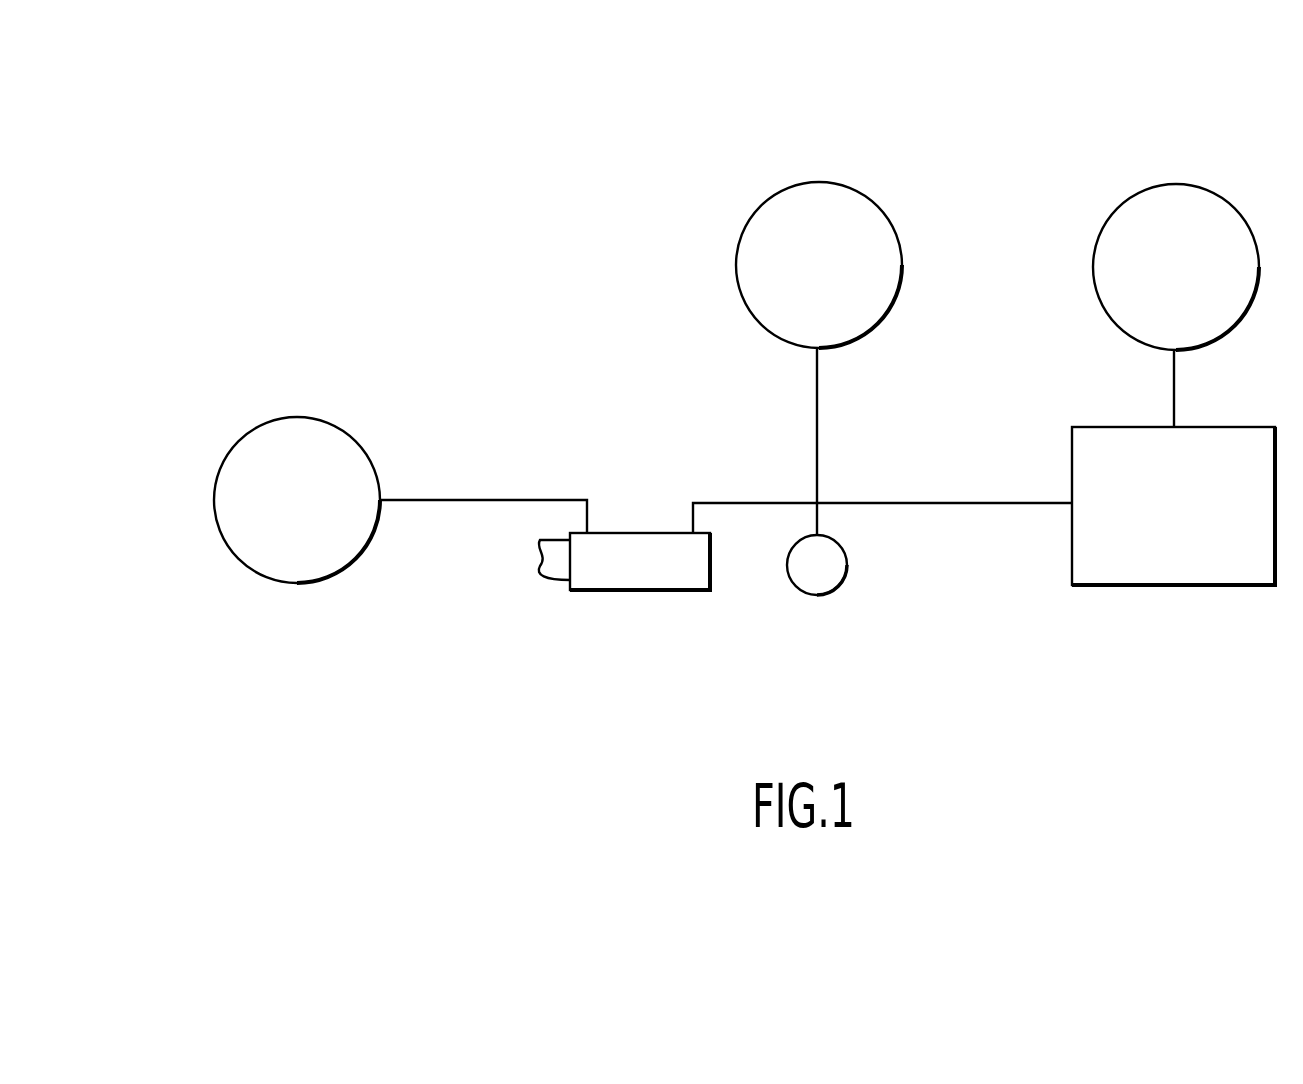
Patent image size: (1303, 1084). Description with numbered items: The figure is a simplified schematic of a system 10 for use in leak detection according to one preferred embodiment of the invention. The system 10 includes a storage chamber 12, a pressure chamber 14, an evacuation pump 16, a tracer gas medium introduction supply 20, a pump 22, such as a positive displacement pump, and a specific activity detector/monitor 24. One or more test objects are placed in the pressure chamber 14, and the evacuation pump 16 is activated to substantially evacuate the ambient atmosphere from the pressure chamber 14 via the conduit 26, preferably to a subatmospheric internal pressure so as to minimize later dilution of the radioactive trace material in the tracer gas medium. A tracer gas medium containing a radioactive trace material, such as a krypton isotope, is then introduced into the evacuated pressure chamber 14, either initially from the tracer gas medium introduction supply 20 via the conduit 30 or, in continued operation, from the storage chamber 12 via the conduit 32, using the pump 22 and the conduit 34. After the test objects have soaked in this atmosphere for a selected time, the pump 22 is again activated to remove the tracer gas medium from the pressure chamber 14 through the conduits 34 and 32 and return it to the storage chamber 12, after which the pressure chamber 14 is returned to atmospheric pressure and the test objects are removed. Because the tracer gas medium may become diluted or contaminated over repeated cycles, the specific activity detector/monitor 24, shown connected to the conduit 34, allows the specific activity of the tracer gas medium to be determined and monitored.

The system 10 is at (1000, 100).
The storage chamber 12 is at (312, 512).
The pressure chamber 14 is at (1189, 522).
The evacuation pump 16 is at (1191, 279).
The tracer gas medium introduction supply 20 is at (834, 277).
The pump 22 is at (637, 575).
The specific activity detector/monitor 24 is at (815, 585).
The conduit 26 is at (1175, 386).
The conduit 30 is at (818, 411).
The conduit 32 is at (457, 497).
The conduit 34 is at (953, 507).